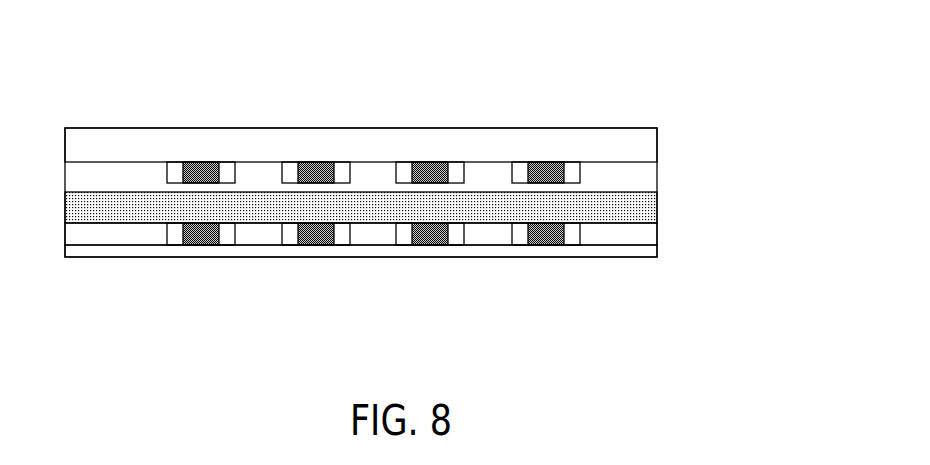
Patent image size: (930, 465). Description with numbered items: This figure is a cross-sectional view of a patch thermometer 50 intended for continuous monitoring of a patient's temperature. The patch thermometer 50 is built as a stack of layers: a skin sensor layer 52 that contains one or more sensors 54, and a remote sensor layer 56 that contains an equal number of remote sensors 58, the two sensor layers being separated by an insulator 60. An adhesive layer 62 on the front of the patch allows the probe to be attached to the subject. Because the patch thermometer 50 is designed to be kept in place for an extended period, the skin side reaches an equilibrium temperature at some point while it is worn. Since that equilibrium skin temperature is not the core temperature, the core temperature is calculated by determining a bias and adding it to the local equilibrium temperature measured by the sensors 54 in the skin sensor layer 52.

The patch thermometer 50 is at (649, 76).
The skin sensor layer 52 is at (657, 235).
The sensors 54 is at (202, 245).
The remote sensor layer 56 is at (657, 179).
The remote sensors 58 is at (202, 162).
The insulator 60 is at (657, 212).
The adhesive layer 62 is at (98, 255).